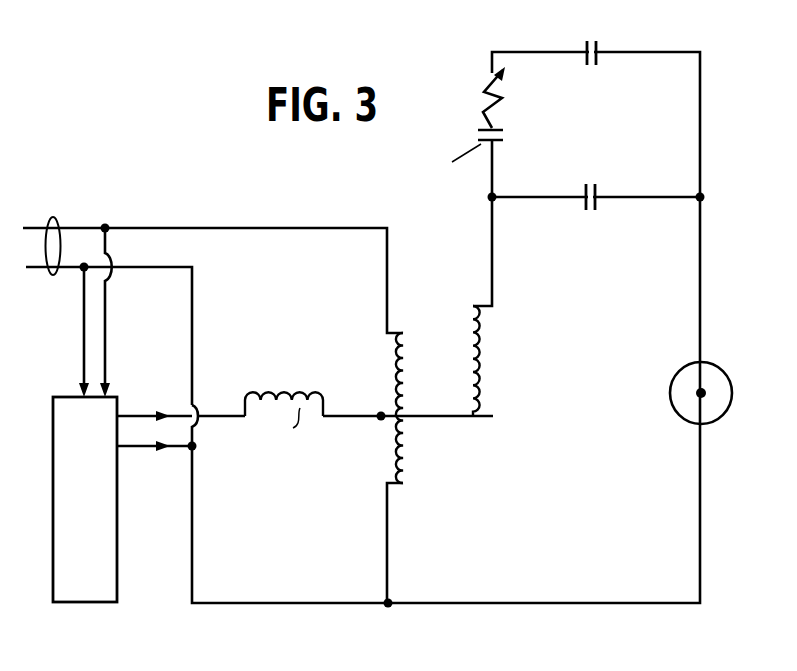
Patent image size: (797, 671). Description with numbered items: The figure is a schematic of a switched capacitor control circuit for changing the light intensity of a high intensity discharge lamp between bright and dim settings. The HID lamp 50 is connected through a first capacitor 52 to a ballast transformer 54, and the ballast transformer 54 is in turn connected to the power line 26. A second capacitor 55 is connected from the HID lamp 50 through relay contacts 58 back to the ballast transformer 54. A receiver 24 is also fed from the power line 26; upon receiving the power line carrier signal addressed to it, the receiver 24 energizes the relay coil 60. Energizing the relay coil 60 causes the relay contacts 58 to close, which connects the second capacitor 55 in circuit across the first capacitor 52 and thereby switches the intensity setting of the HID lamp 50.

The power line 26 is at (57, 217).
The receiver 24 is at (117, 583).
The relay coil 60 is at (322, 399).
The ballast transformer 54 is at (468, 385).
The relay contacts 58 is at (479, 137).
The second capacitor 55 is at (598, 50).
The first capacitor 52 is at (593, 212).
The HID lamp 50 is at (727, 378).